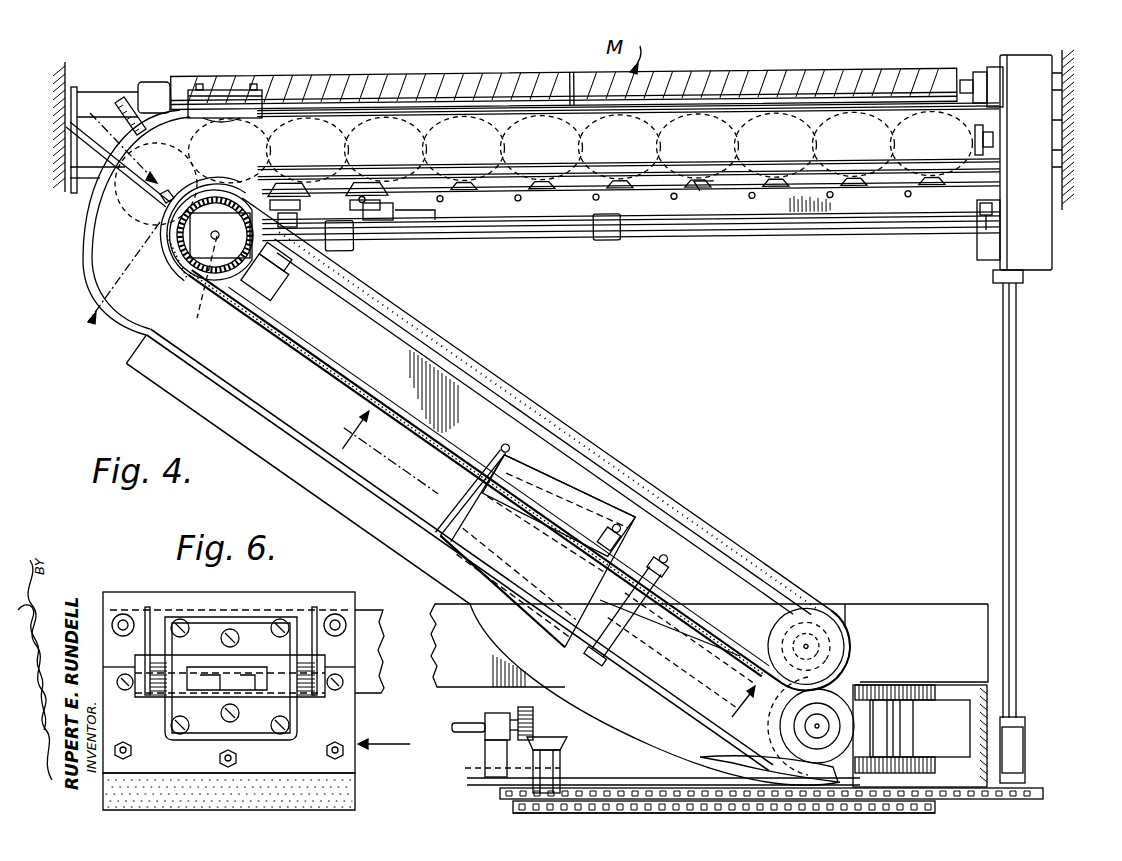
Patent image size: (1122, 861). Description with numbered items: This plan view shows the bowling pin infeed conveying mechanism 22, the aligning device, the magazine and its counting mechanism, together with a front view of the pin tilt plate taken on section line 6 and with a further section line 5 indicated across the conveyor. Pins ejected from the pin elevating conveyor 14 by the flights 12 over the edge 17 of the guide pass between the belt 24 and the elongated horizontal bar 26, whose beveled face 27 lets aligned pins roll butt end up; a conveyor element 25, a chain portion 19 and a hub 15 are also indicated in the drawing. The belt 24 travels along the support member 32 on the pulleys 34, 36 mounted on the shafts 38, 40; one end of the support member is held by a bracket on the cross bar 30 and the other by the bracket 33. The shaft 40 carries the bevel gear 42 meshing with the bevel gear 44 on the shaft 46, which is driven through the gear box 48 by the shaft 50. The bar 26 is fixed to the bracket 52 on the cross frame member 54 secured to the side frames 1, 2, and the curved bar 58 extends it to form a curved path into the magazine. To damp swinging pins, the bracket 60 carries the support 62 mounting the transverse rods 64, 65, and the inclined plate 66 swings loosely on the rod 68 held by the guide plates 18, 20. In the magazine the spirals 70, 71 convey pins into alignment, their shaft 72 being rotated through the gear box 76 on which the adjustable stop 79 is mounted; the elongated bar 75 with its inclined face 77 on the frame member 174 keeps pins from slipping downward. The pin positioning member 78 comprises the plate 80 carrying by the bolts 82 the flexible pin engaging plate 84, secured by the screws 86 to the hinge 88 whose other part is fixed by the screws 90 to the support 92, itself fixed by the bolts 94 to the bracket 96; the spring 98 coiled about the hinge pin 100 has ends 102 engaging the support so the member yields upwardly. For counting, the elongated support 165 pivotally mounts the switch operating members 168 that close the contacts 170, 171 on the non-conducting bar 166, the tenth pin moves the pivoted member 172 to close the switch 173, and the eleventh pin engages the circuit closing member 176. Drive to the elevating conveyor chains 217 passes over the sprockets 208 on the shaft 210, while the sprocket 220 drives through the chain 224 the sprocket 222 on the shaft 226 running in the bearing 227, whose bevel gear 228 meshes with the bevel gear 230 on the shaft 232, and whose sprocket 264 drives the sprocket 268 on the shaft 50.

In FIG. 4, the side frame 1 is at (90, 50).
In FIG. 4, the side frame 2 is at (1062, 56).
In FIG. 4, the section line 5 is at (535, 569).
In FIG. 4, the section line 6 is at (89, 228).
In FIG. 4, the flights 12 is at (920, 728).
In FIG. 4, the pin elevating conveyor 14 is at (920, 700).
In FIG. 4, the lower sprocket hub 15 is at (800, 722).
In FIG. 4, the edge of guide 17 is at (822, 720).
In FIG. 4, the guide plate 18 is at (482, 649).
In FIG. 4, the lower chain strand 19 is at (718, 668).
In FIG. 4, the guide plate 20 is at (678, 552).
In FIG. 4, the pin aligning and conveying mechanism 22 is at (510, 374).
In FIG. 4, the belt 24 is at (312, 356).
In FIG. 4, the conveyor chain rail 25 is at (320, 368).
In FIG. 4, the horizontal bar 26 is at (289, 478).
In FIG. 4, the beveled face 27 is at (351, 462).
In FIG. 4, the cross bar 30 is at (960, 602).
In FIG. 4, the support member 32 is at (393, 335).
In FIG. 4, the bracket 33 is at (346, 222).
In FIG. 4, the pulley 34 is at (842, 618).
In FIG. 4, the pulley 36 is at (200, 262).
In FIG. 4, the shaft 38 is at (850, 643).
In FIG. 4, the shaft 40 is at (193, 288).
In FIG. 4, the bevel gear 42 is at (174, 248).
In FIG. 4, the bevel gear 44 is at (282, 280).
In FIG. 4, the shaft 46 is at (553, 236).
In FIG. 4, the gear box 48 is at (982, 248).
In FIG. 4, the shaft 50 is at (1018, 312).
In FIG. 4, the bracket 52 is at (628, 757).
In FIG. 4, the cross frame member 54 is at (480, 769).
In FIG. 4, the curved bar 58 is at (84, 264).
In FIG. 4, the bracket 60 is at (666, 643).
In FIG. 4, the support 62 is at (436, 539).
In FIG. 4, the rod 64 is at (614, 638).
In FIG. 4, the rod 65 is at (474, 547).
In FIG. 4, the plate 66 is at (470, 501).
In FIG. 4, the rod 68 is at (600, 550).
In FIG. 4, the spiral 70 is at (820, 58).
In FIG. 4, the spiral 71 is at (713, 196).
In FIG. 4, the shaft 72 is at (968, 74).
In FIG. 4, the elongated bar 75 is at (370, 117).
In FIG. 4, the gear box 76 is at (1035, 215).
In FIG. 4, the inclined face 77 is at (432, 78).
In FIG. 4, the pin positioning member 78 is at (190, 164).
In FIG. 6, the pin positioning member 78 is at (384, 737).
In FIG. 4, the adjustable stop 79 is at (975, 138).
In FIG. 6, the plate 80 is at (342, 714).
In FIG. 6, the bolts 82 is at (215, 758).
In FIG. 6, the pin engaging plate 84 is at (353, 792).
In FIG. 6, the screws 86 is at (270, 727).
In FIG. 6, the hinge 88 is at (170, 713).
In FIG. 6, the screws 90 is at (275, 628).
In FIG. 6, the support 92 is at (286, 580).
In FIG. 6, the bolts 94 is at (123, 618).
In FIG. 4, the bracket 96 is at (62, 140).
In FIG. 6, the bracket 96 is at (373, 610).
In FIG. 6, the spring 98 is at (152, 695).
In FIG. 6, the hinge pin 100 is at (317, 697).
In FIG. 6, the spring ends 102 is at (148, 617).
In FIG. 4, the elongated support 165 is at (778, 213).
In FIG. 4, the non-conducting bar 166 is at (414, 216).
In FIG. 4, the switch operating members 168 is at (437, 198).
In FIG. 4, the switch contact 170 is at (395, 212).
In FIG. 4, the switch contact 171 is at (378, 212).
In FIG. 4, the pivoted switch operating member 172 is at (227, 118).
In FIG. 4, the switch 173 is at (211, 88).
In FIG. 4, the frame member 174 is at (120, 102).
In FIG. 4, the circuit closing member 176 is at (72, 178).
In FIG. 4, the sprockets 208 is at (910, 715).
In FIG. 4, the shaft 210 is at (992, 797).
In FIG. 4, the chains 217 is at (890, 690).
In FIG. 4, the sprocket 220 is at (933, 795).
In FIG. 4, the sprocket 222 is at (510, 806).
In FIG. 4, the chain 224 is at (704, 784).
In FIG. 4, the shaft 226 is at (490, 750).
In FIG. 4, the bearing 227 is at (455, 728).
In FIG. 4, the bevel gear 228 is at (560, 726).
In FIG. 4, the bevel gear 230 is at (530, 700).
In FIG. 4, the shaft 232 is at (490, 716).
In FIG. 4, the sprocket 264 is at (498, 786).
In FIG. 4, the sprocket 268 is at (1028, 780).